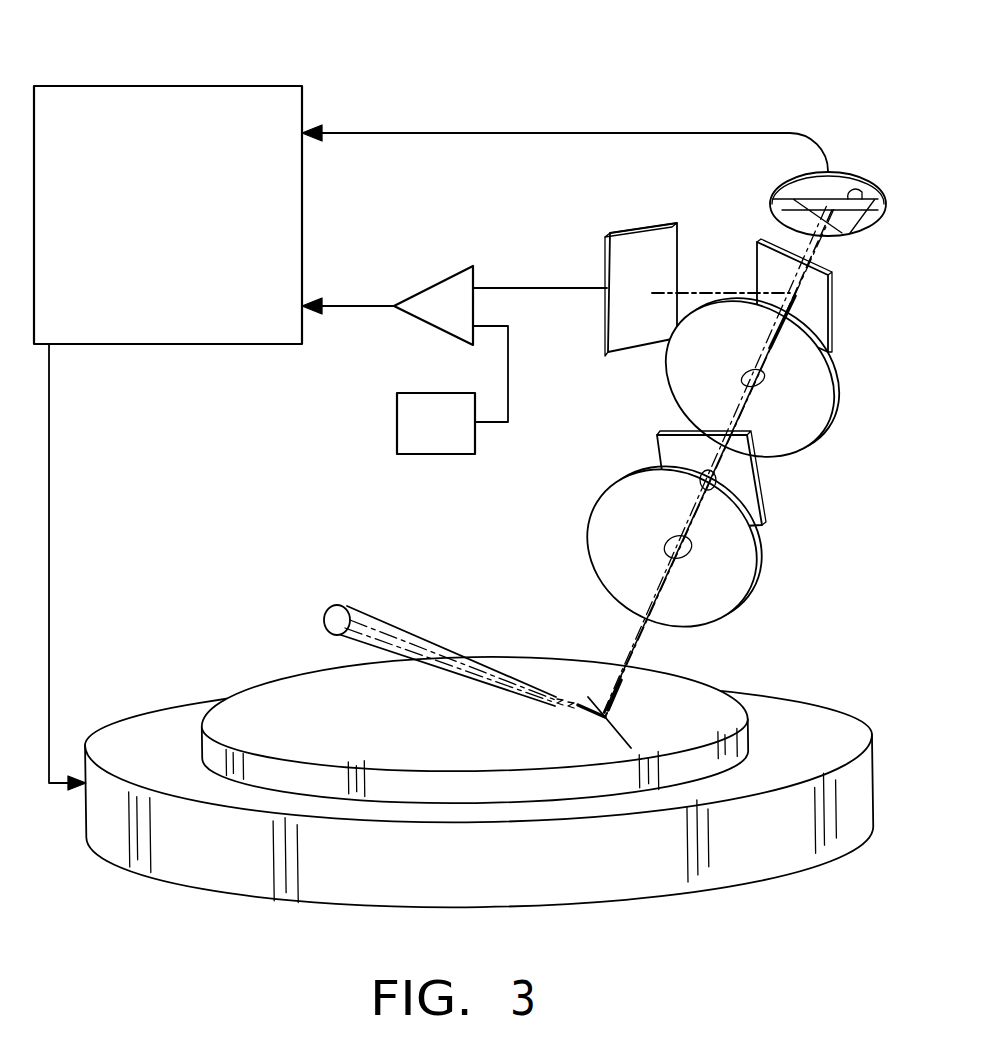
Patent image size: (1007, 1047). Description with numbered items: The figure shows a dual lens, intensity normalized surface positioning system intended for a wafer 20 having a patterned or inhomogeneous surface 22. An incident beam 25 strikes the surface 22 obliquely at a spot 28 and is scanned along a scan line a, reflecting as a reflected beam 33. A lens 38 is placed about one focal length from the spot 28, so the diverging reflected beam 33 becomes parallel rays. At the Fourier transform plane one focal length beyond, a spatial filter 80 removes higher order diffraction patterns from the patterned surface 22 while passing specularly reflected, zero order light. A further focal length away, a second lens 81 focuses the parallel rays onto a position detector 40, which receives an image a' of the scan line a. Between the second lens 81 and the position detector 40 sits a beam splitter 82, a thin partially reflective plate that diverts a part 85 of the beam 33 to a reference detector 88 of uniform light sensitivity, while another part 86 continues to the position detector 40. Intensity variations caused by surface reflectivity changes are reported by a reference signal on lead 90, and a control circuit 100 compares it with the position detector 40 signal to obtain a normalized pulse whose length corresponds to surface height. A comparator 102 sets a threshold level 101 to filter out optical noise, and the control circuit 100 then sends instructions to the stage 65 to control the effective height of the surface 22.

The control circuit 100 is at (179, 86).
The comparator 102 is at (447, 276).
The threshold level 101 is at (397, 422).
The lead 90 is at (556, 288).
The reference detector 88 is at (636, 226).
The part of the beam 85 is at (712, 293).
The beam splitter 82 is at (831, 320).
The second lens 81 is at (836, 385).
The spatial filter 80 is at (762, 492).
The lens 38 is at (757, 555).
The position detector 40 is at (770, 197).
The another part of the beam 86 is at (818, 246).
The reflected beam 33 is at (633, 652).
The incident beam 25 is at (393, 628).
The spot 28 is at (605, 716).
The surface 22 is at (718, 700).
The wafer 20 is at (750, 723).
The stage 65 is at (872, 777).
The scan line a is at (637, 721).
The image of the scan line a' is at (871, 168).